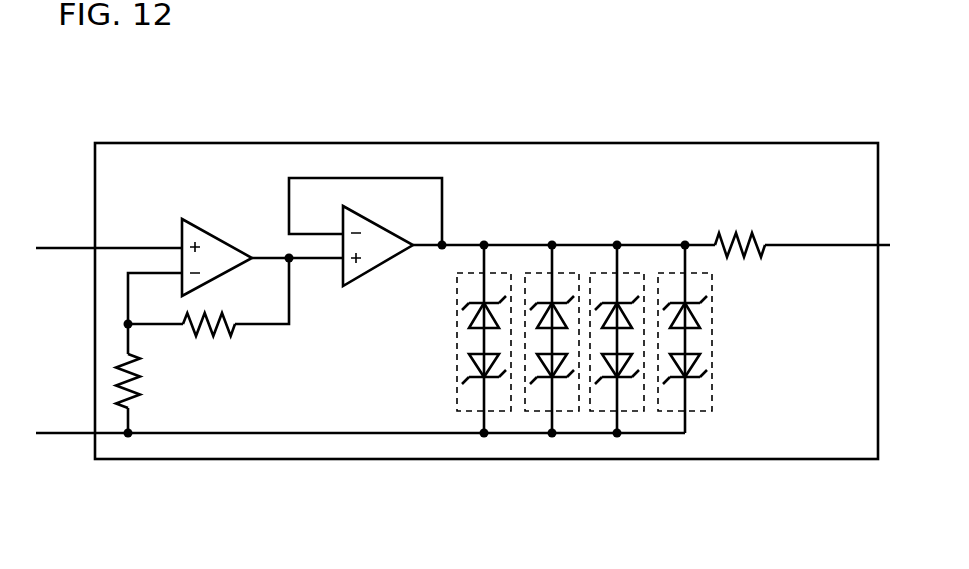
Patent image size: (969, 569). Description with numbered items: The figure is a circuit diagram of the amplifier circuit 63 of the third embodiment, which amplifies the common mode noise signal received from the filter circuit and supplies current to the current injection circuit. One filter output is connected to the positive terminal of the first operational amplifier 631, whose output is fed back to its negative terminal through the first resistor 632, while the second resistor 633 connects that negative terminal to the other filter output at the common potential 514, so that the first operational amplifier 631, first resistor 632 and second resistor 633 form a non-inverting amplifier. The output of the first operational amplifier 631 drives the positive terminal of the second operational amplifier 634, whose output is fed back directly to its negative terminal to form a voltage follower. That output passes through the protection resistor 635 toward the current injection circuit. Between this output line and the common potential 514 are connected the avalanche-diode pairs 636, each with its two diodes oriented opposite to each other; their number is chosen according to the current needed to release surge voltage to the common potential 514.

The amplifier circuit 63 is at (138, 143).
The first operational amplifier 631 is at (192, 221).
The first resistor 632 is at (211, 338).
The second resistor 633 is at (140, 393).
The second operational amplifier 634 is at (371, 275).
The protection resistor 635 is at (735, 232).
The avalanche-diode pairs 636 is at (457, 333).
The common potential 514 is at (54, 433).